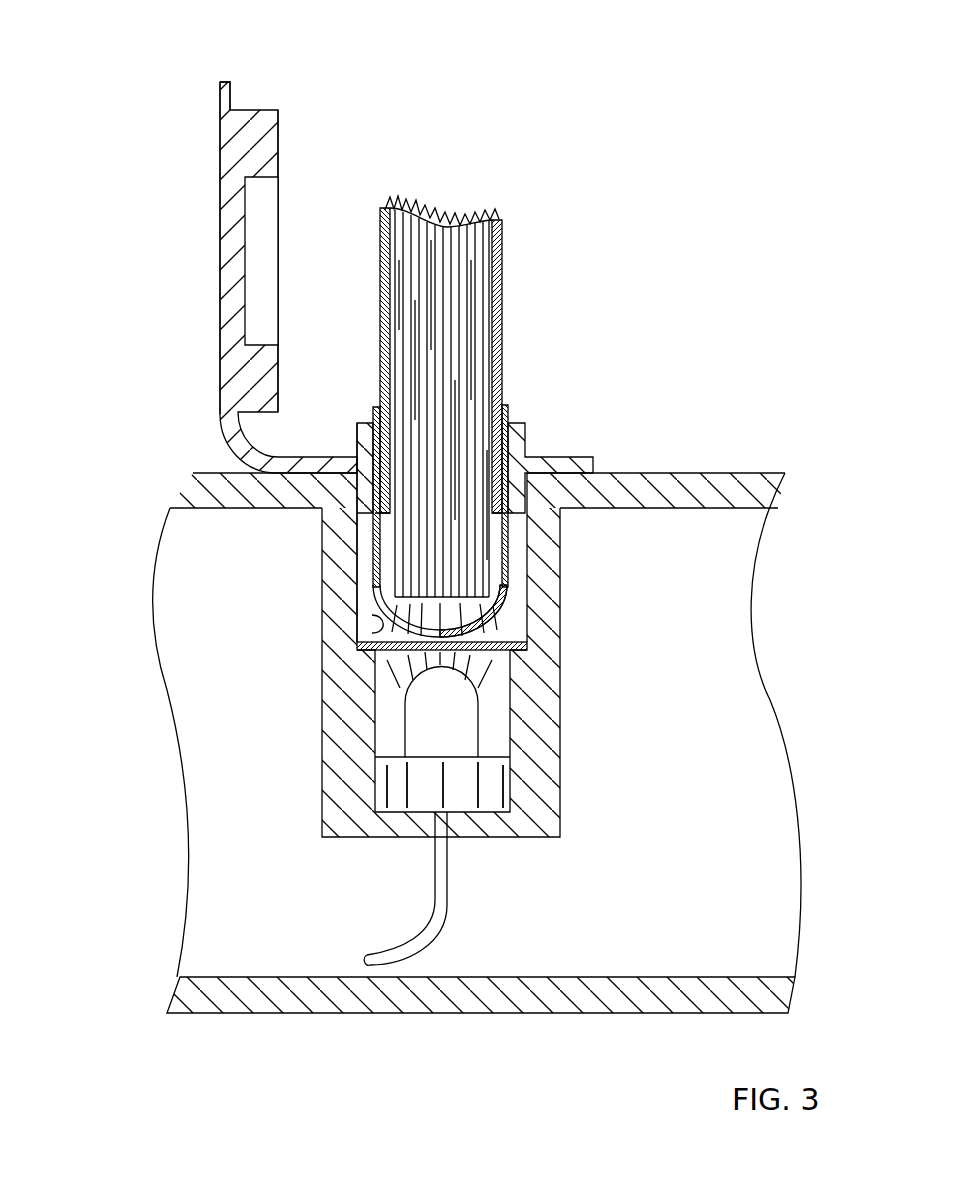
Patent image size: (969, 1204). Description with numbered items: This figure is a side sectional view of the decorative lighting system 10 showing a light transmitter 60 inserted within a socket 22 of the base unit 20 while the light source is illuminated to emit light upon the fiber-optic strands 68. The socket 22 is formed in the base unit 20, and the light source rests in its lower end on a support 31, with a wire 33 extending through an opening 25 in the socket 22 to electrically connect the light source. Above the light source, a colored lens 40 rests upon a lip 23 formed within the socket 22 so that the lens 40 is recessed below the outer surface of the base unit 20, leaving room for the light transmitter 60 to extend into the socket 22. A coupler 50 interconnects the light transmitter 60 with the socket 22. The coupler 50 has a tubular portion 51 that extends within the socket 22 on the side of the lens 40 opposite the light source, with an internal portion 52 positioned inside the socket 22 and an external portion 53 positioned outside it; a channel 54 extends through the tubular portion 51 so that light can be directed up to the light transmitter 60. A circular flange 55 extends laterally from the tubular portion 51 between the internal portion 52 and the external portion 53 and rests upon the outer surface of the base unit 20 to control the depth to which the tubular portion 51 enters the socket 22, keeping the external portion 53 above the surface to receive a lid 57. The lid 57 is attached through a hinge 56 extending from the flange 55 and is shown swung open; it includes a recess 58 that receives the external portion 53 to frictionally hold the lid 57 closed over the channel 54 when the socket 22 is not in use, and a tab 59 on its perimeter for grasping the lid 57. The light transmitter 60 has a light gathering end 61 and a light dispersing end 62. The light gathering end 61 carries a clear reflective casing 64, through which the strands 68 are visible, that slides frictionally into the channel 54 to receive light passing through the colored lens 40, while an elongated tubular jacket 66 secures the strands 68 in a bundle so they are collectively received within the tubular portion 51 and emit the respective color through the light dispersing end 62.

The decorative lighting system 10 is at (750, 145).
The base unit 20 is at (722, 487).
The socket 22 is at (350, 722).
The lip 23 is at (518, 655).
The opening 25 is at (457, 828).
The support 31 is at (502, 765).
The wire 33 is at (465, 722).
The colored lens 40 is at (527, 643).
The coupler 50 is at (466, 519).
The tubular portion 51 is at (337, 594).
The internal portion 52 is at (363, 562).
The external portion 53 is at (610, 519).
The channel 54 is at (372, 626).
The circular flange 55 is at (578, 462).
The hinge 56 is at (243, 262).
The lid 57 is at (225, 310).
The recess 58 is at (258, 213).
The tab 59 is at (220, 85).
The light transmitter 60 is at (605, 376).
The light gathering end 61 is at (521, 627).
The light dispersing end 62 is at (497, 183).
The reflective casing 64 is at (515, 597).
The tubular jacket 66 is at (500, 357).
The fiber-optic strands 68 is at (483, 258).